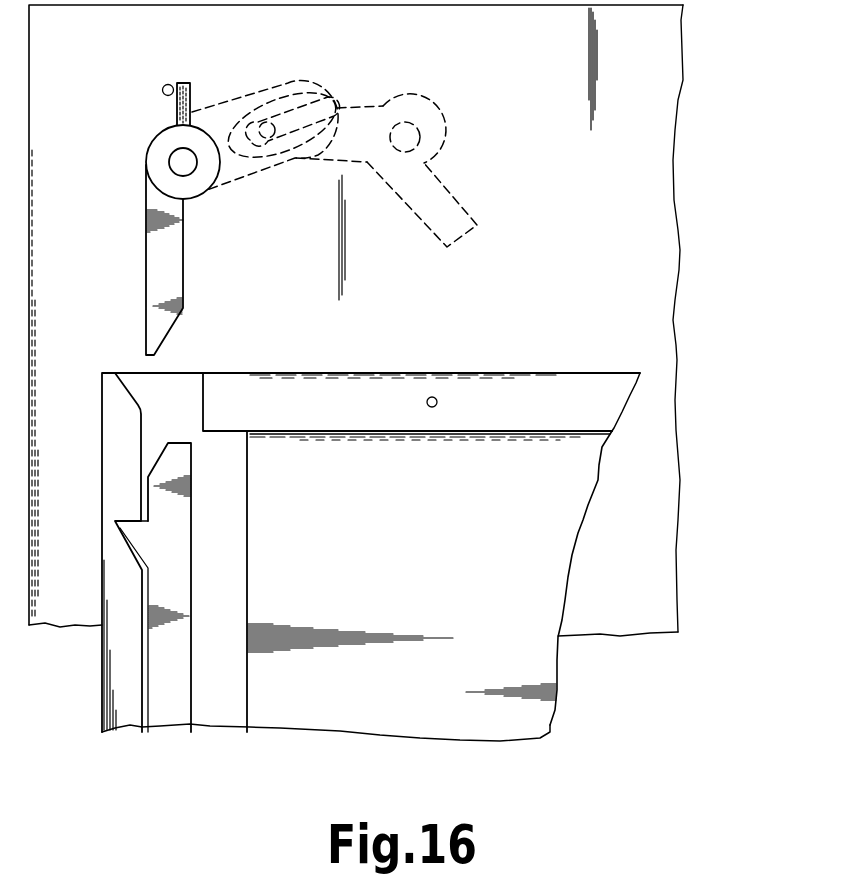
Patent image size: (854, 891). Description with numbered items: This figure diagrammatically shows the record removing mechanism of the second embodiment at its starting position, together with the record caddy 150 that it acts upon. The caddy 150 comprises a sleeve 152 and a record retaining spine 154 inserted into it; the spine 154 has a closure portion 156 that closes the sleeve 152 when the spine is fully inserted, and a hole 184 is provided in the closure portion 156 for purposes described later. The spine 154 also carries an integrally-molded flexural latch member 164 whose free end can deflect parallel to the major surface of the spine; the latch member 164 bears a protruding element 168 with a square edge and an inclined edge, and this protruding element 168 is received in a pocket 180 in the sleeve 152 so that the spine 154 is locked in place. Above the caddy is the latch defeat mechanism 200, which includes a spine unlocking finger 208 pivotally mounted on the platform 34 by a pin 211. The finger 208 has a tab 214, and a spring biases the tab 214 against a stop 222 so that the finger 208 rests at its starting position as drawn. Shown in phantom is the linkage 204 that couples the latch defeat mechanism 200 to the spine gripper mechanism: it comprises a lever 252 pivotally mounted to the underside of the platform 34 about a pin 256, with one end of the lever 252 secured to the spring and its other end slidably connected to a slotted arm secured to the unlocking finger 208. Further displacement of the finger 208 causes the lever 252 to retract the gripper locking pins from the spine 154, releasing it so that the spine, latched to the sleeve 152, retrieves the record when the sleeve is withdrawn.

The platform 34 is at (657, 430).
The record caddy 150 is at (339, 559).
The sleeve 152 is at (118, 645).
The record retaining spine 154 is at (562, 538).
The closure portion 156 is at (347, 385).
The flexural latch member 164 is at (178, 470).
The protruding element 168 is at (142, 542).
The pocket 180 is at (137, 546).
The hole 184 is at (436, 397).
The latch defeat mechanism 200 is at (164, 188).
The linkage 204 is at (360, 155).
The spine unlocking finger 208 is at (168, 278).
The pin 211 is at (173, 163).
The tab 214 is at (192, 82).
The stop 222 is at (161, 90).
The lever 252 is at (448, 220).
The pin 256 is at (408, 136).